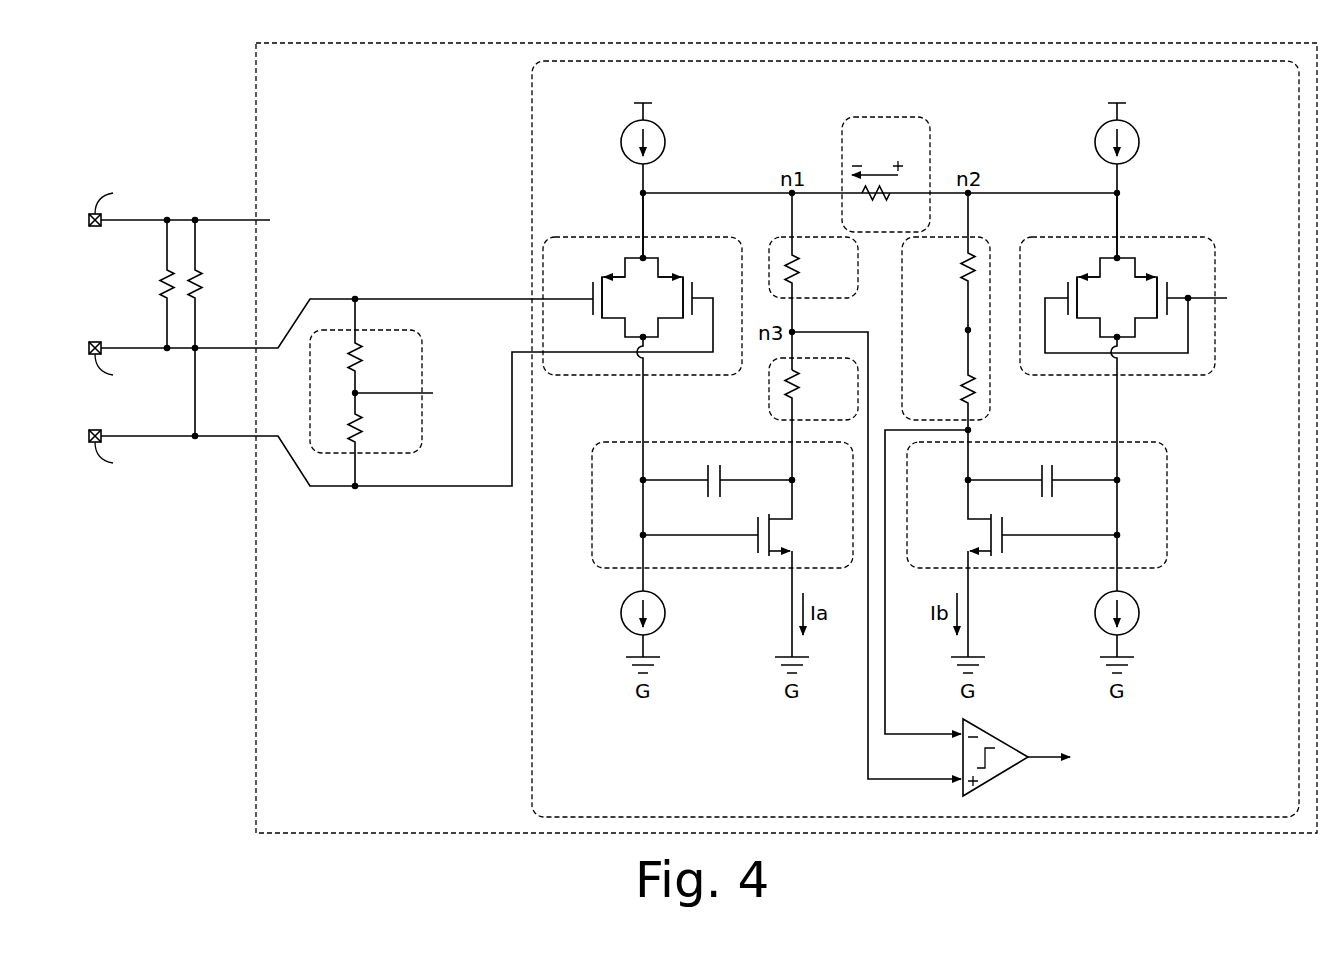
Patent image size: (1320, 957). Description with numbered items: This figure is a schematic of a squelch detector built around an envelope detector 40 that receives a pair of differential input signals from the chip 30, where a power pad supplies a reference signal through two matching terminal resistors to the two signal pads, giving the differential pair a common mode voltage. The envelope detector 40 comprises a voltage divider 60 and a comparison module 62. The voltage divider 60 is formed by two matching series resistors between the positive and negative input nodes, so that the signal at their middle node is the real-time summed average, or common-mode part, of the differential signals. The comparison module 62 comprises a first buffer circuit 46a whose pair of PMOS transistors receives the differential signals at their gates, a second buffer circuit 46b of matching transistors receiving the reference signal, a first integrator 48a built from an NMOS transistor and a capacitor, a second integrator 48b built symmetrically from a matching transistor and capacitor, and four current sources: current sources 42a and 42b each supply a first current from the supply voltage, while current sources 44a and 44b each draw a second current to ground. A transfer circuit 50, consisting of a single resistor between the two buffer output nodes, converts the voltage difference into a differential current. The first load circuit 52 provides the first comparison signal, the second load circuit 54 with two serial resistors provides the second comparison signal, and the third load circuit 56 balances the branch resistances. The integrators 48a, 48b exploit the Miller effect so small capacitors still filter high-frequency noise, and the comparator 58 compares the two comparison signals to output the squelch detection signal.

The chip 30 is at (153, 147).
The envelope detector 40 is at (256, 569).
The first current source 42a is at (629, 160).
The second current source 42b is at (1131, 160).
The third current source 44a is at (629, 631).
The fourth current source 44b is at (1131, 631).
The first buffer circuit 46a is at (612, 375).
The second buffer circuit 46b is at (1153, 375).
The first integrator 48a is at (700, 570).
The second integrator 48b is at (1062, 570).
The transfer circuit 50 is at (880, 118).
The first load circuit 52 is at (786, 237).
The second load circuit 54 is at (973, 237).
The third load circuit 56 is at (770, 405).
The comparator 58 is at (990, 733).
The voltage divider 60 is at (422, 353).
The comparison module 62 is at (532, 569).